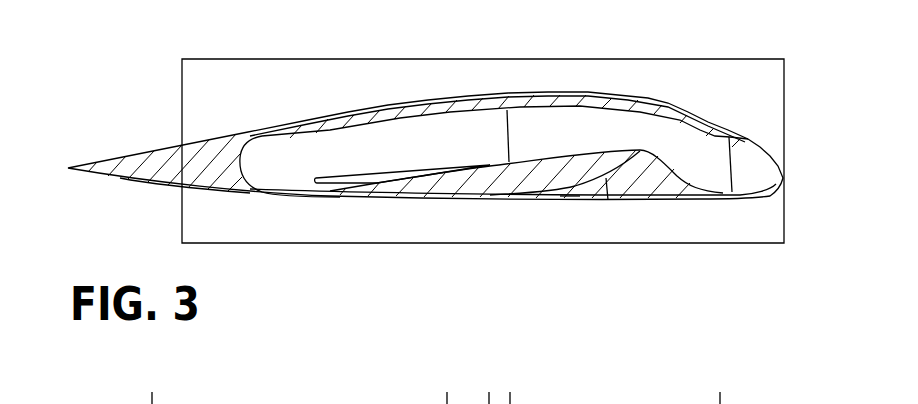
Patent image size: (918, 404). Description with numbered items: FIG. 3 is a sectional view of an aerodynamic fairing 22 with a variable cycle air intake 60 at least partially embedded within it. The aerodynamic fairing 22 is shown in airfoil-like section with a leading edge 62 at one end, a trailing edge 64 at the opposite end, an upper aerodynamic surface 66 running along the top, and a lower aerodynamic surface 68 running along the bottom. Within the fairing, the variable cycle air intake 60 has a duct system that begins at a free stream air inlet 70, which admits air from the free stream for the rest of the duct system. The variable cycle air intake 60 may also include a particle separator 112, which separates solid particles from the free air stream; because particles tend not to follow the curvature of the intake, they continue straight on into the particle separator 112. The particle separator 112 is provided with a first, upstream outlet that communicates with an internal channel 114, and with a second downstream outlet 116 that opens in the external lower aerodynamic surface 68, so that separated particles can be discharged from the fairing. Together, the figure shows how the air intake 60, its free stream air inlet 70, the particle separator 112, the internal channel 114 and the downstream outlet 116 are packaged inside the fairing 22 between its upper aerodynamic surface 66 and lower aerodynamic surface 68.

The leading edge 62 is at (785, 178).
The trailing edge 64 is at (68, 167).
The upper aerodynamic surface 66 is at (127, 156).
The lower aerodynamic surface 68 is at (122, 182).
The free stream air inlet 70 is at (733, 160).
The aerodynamic fairing 22 is at (543, 201).
The variable cycle air intake 60 is at (393, 152).
The particle separator 112 is at (608, 200).
The internal channel 114 is at (580, 197).
The second downstream outlet 116 is at (570, 203).